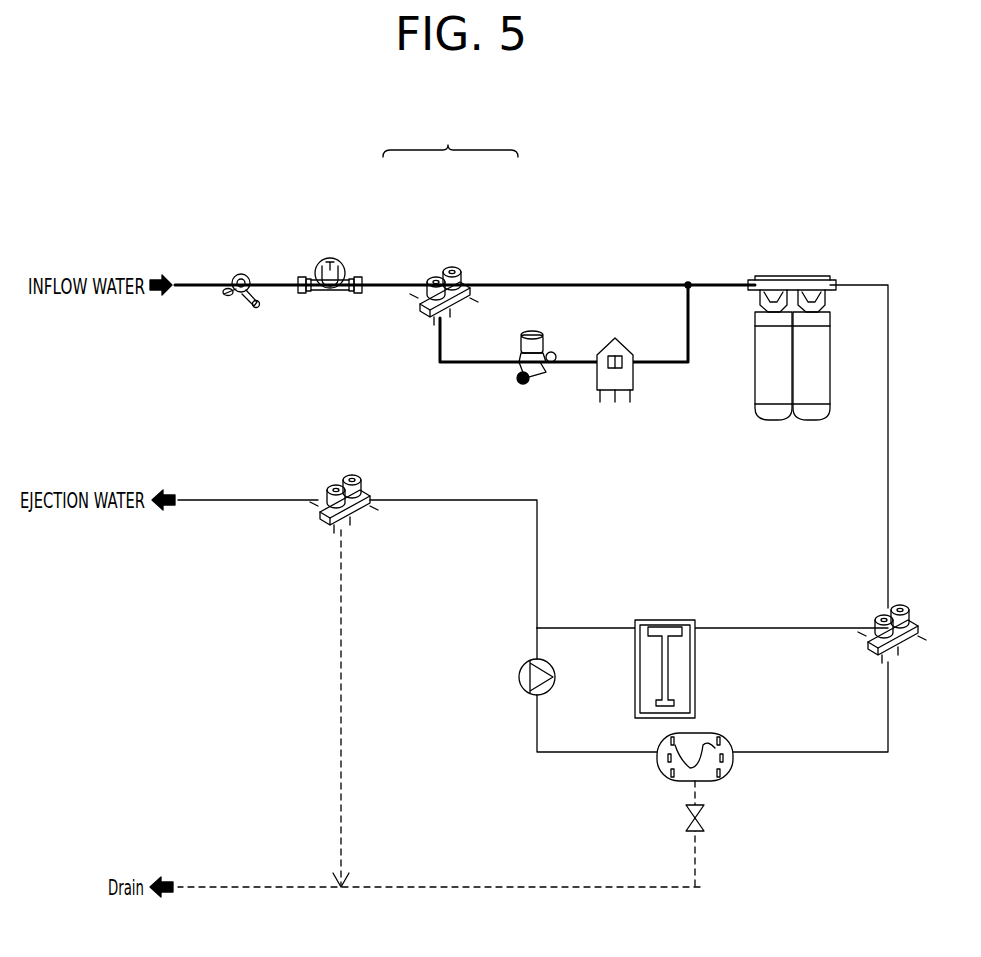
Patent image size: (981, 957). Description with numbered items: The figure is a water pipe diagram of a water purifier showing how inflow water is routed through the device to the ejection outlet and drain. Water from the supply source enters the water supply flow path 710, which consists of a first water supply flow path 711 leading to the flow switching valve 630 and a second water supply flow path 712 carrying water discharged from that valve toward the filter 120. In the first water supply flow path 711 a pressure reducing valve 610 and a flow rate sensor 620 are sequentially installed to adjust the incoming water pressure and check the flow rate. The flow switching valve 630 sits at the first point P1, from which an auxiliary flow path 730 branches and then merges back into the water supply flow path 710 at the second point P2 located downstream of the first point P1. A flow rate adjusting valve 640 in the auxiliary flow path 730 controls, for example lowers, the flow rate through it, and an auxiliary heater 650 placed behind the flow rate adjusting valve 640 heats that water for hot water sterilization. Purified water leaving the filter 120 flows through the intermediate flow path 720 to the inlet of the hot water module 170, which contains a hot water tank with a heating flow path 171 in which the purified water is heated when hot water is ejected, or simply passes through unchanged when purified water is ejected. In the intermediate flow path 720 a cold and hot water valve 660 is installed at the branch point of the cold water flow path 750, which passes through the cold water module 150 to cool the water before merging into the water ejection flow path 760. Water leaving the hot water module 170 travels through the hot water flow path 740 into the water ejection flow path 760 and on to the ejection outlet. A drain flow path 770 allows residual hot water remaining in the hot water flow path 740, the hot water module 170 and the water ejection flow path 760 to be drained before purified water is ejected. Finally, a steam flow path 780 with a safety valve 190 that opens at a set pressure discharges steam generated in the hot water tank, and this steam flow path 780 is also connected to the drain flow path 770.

The filter 120 is at (773, 415).
The cold water module 150 is at (695, 670).
The hot water module 170 is at (732, 778).
The heating flow path 171 is at (722, 738).
The safety valve 190 is at (684, 818).
The pressure reducing valve 610 is at (242, 274).
The flow rate sensor 620 is at (330, 258).
The flow switching valve 630 is at (452, 266).
The flow rate adjusting valve 640 is at (528, 383).
The auxiliary heater 650 is at (610, 393).
The cold and hot water valve 660 is at (905, 642).
The water supply flow path 710 is at (450, 137).
The first water supply flow path 711 is at (385, 282).
The second water supply flow path 712 is at (505, 282).
The intermediate flow path 720 is at (887, 513).
The auxiliary flow path 730 is at (465, 366).
The hot water flow path 740 is at (570, 754).
The cold water flow path 750 is at (580, 626).
The water ejection flow path 760 is at (445, 502).
The drain flow path 770 is at (343, 645).
The steam flow path 780 is at (597, 892).
The first point P1 is at (420, 280).
The second point P2 is at (688, 276).